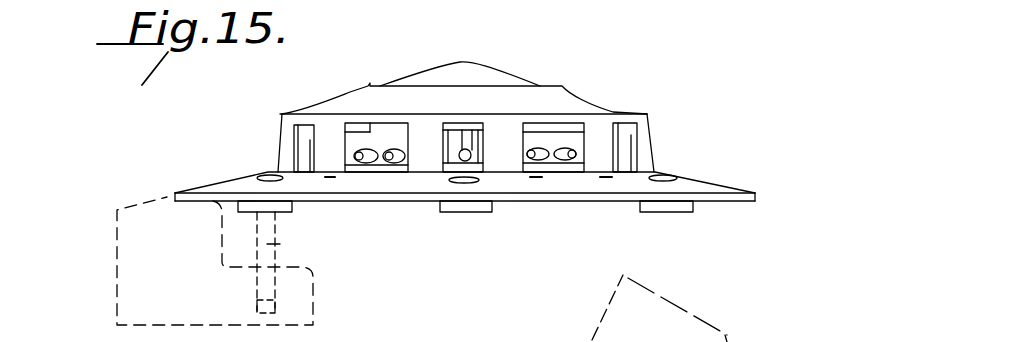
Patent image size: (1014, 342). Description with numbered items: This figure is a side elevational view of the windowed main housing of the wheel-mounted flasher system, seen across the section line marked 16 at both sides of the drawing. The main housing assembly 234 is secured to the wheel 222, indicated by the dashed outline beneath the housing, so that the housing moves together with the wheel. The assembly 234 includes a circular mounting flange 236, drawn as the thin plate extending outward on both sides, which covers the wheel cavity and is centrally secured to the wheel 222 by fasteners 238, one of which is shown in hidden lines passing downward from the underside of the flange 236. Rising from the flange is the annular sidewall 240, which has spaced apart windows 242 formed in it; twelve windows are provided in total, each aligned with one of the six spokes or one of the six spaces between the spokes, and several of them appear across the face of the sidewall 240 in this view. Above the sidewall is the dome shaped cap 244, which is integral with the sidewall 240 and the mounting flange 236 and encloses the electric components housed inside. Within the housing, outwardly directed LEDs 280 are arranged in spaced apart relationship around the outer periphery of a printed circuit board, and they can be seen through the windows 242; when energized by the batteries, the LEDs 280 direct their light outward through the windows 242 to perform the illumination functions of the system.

The section line 16- 16 is at (173, 128).
The wheel 222 is at (156, 254).
The main housing assembly 234 is at (262, 155).
The circular mounting flange 236 is at (232, 190).
The fasteners 238 is at (280, 244).
The annular sidewall 240 is at (604, 128).
The windows 242 is at (632, 140).
The cap 244 is at (493, 97).
The LEDs 280 is at (397, 166).